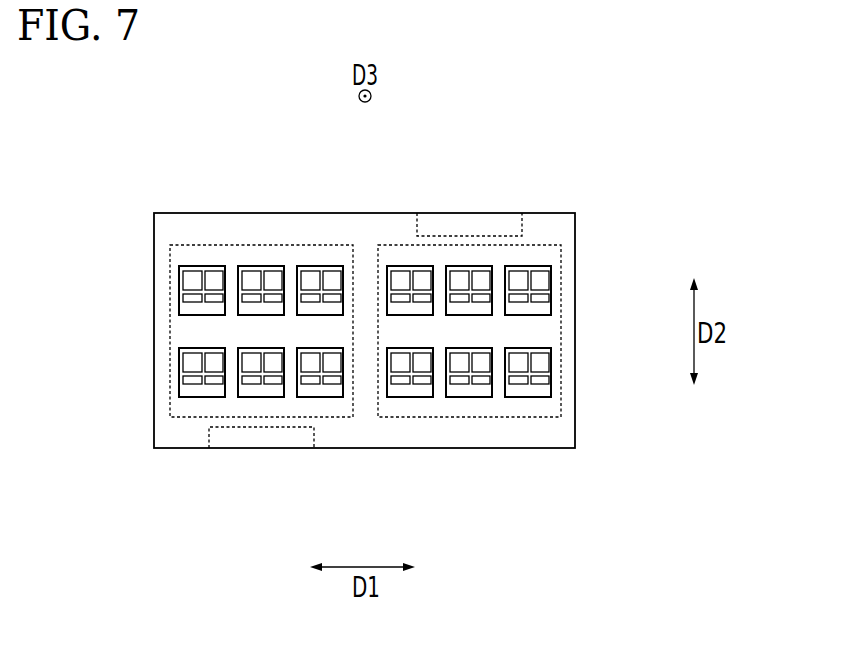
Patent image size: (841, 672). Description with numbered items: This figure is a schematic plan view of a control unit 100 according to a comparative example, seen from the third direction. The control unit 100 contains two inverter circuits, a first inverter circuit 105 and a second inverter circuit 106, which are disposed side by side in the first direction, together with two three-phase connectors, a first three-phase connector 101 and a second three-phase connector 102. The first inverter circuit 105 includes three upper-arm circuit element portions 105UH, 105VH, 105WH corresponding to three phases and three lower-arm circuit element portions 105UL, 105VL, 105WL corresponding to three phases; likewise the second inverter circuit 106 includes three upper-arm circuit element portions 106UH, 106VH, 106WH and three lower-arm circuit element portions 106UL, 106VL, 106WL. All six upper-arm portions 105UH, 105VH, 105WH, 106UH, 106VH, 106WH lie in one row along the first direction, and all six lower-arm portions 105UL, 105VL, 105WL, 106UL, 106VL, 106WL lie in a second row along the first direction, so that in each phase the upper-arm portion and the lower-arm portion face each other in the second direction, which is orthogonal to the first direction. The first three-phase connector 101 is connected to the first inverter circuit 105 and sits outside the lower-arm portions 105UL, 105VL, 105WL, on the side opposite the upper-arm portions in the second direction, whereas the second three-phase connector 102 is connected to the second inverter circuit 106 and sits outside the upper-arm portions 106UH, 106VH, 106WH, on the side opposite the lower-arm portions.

The control unit 100 is at (579, 228).
The first three-phase connector 101 is at (210, 435).
The second three-phase connector 102 is at (522, 226).
The first inverter circuit 105 is at (170, 330).
The second inverter circuit 106 is at (562, 328).
The upper-arm circuit element portion 105UH is at (203, 266).
The upper-arm circuit element portion 105VH is at (261, 266).
The upper-arm circuit element portion 105WH is at (320, 266).
The lower-arm circuit element portion 105UL is at (202, 397).
The lower-arm circuit element portion 105VL is at (261, 397).
The lower-arm circuit element portion 105WL is at (320, 397).
The upper-arm circuit element portion 106UH is at (411, 266).
The upper-arm circuit element portion 106VH is at (469, 266).
The upper-arm circuit element portion 106WH is at (528, 266).
The lower-arm circuit element portion 106UL is at (411, 397).
The lower-arm circuit element portion 106VL is at (469, 397).
The lower-arm circuit element portion 106WL is at (528, 397).